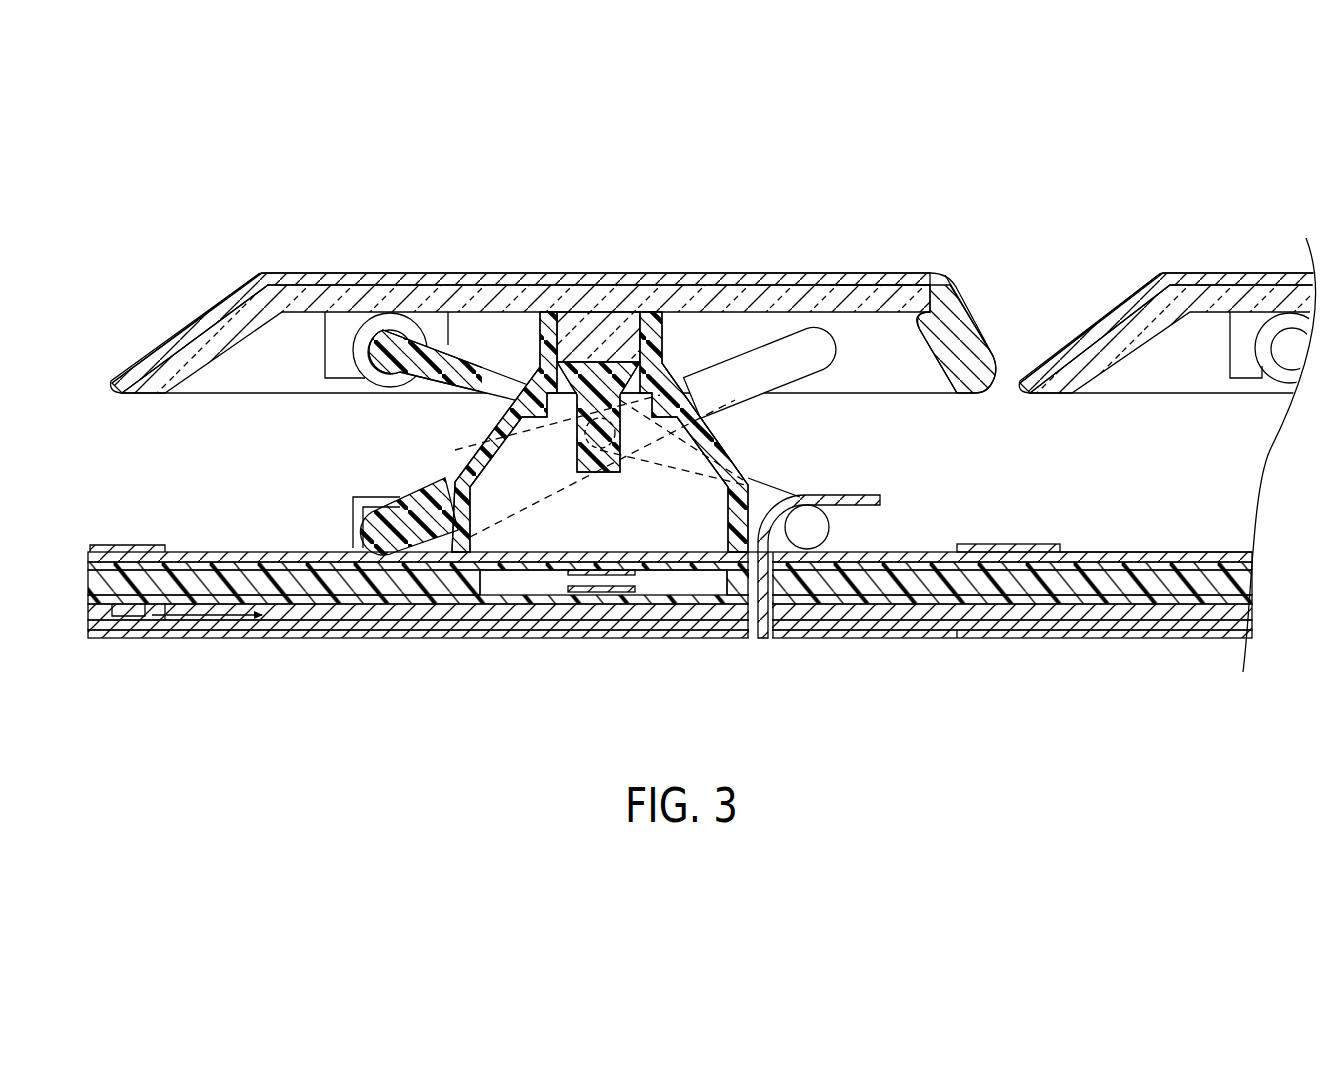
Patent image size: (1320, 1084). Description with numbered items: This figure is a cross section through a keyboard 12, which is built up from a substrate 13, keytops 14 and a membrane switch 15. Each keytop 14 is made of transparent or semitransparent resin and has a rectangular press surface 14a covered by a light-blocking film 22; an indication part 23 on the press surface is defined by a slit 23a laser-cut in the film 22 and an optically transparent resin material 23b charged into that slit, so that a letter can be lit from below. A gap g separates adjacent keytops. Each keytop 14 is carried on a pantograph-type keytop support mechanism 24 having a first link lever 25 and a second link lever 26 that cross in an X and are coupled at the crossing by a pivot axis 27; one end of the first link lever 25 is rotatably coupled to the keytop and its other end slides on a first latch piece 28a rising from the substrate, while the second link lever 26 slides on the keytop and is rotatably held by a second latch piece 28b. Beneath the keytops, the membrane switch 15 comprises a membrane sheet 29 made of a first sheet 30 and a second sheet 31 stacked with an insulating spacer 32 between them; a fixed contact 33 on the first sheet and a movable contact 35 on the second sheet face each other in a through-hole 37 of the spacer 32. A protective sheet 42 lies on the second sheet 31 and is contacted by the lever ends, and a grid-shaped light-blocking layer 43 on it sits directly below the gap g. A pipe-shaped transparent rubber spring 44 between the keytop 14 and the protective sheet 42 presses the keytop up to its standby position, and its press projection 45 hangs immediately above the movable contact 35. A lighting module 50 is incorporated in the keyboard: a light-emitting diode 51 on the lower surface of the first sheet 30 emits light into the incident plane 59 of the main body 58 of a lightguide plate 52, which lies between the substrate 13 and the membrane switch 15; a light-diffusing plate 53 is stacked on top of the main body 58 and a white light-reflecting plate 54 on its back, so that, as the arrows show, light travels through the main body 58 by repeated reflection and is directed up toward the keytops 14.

The keyboard 12 is at (1236, 196).
The substrate 13 is at (506, 634).
The keytop 14 is at (440, 296).
The press surface 14a is at (541, 283).
The membrane switch 15 is at (690, 606).
The film 22 is at (262, 271).
The indication part 23 is at (938, 213).
The slit 23a is at (910, 272).
The resin material 23b is at (842, 282).
The keytop support mechanism 24 is at (722, 340).
The first link lever 25 is at (470, 410).
The second link lever 26 is at (440, 482).
The pivot axis 27 is at (708, 424).
The first latch piece 28a is at (882, 500).
The second latch piece 28b is at (353, 508).
The membrane sheet 29 is at (940, 690).
The first sheet 30 is at (858, 598).
The second sheet 31 is at (918, 584).
The insulating spacer 32 is at (330, 584).
The fixed contact 33 is at (603, 594).
The movable contact 35 is at (612, 569).
The through-hole 37 is at (495, 600).
The protective sheet 42 is at (1148, 552).
The light-blocking layer 43 is at (1032, 543).
The rubber spring 44 is at (745, 478).
The press projection 45 is at (596, 472).
The lighting module 50 is at (170, 634).
The light-emitting diode 51 is at (112, 609).
The lightguide plate 52 is at (267, 621).
The light-diffusing plate 53 is at (238, 612).
The light-reflecting plate 54 is at (550, 630).
The main body 58 is at (393, 622).
The incident plane 59 is at (150, 547).
The gap g is at (1010, 376).